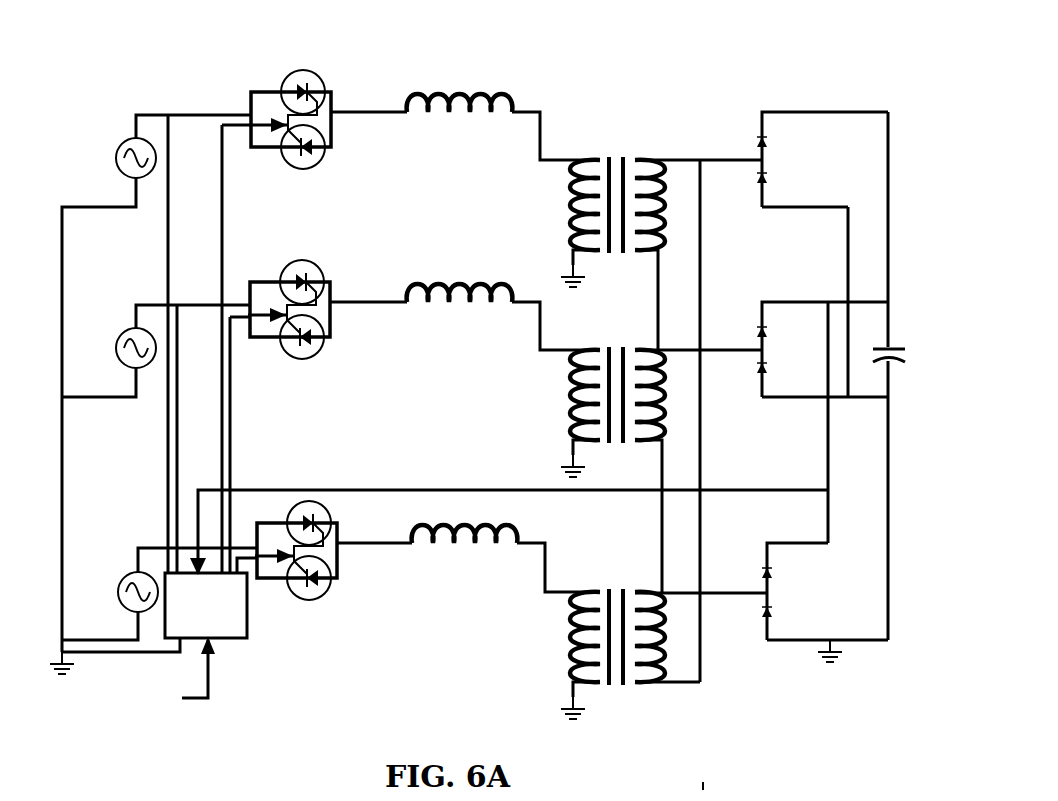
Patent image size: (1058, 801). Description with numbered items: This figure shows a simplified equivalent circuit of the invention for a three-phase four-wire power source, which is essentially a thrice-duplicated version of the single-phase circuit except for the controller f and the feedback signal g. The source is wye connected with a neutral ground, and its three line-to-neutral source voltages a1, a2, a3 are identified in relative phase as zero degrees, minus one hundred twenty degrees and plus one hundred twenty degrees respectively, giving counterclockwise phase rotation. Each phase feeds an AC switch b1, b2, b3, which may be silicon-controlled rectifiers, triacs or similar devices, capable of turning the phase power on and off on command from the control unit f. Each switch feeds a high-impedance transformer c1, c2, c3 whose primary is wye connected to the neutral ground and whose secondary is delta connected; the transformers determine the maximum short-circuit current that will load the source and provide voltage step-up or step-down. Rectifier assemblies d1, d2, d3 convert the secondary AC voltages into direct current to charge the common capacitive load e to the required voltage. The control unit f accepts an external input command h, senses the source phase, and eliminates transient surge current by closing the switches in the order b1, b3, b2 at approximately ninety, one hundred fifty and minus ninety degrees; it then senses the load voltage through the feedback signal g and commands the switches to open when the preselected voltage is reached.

The phase line to neutral source voltage a1 is at (116, 159).
The phase line to neutral source voltage a2 is at (118, 352).
The phase line to neutral source voltage a3 is at (117, 615).
The AC switch b1 is at (311, 118).
The AC switch b2 is at (310, 308).
The AC switch b3 is at (317, 548).
The high-impedance transformer c1 is at (460, 112).
The high-impedance transformer c2 is at (460, 302).
The high-impedance transformer c3 is at (465, 541).
The rectifier assembly d1 is at (821, 144).
The rectifier assembly d2 is at (821, 333).
The rectifier assembly d3 is at (823, 586).
The capacitive load e is at (900, 361).
The control unit f is at (218, 600).
The feedback signal g is at (366, 483).
The control input signal h is at (194, 707).